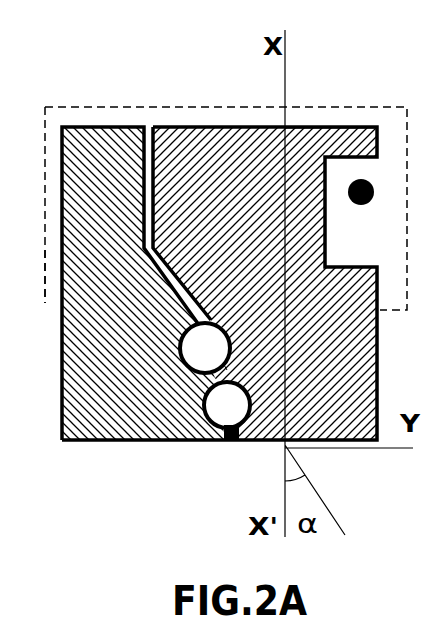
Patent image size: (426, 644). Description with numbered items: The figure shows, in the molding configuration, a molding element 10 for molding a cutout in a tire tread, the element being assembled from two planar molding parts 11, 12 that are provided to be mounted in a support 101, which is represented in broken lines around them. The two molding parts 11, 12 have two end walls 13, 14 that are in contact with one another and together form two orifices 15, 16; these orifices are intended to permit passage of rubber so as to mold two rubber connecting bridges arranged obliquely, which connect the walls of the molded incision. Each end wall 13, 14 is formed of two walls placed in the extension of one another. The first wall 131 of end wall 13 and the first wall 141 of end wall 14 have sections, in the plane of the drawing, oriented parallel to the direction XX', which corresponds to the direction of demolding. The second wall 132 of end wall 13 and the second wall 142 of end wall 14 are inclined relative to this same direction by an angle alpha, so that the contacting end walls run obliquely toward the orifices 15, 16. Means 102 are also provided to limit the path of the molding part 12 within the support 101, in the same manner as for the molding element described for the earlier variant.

The molding element 10 is at (31, 108).
The support 101 is at (46, 308).
The path-limiting means 102 is at (373, 184).
The planar molding part 11 is at (93, 375).
The planar molding part 12 is at (356, 447).
The end wall 13 is at (186, 383).
The first wall 131 is at (129, 157).
The second wall 132 is at (177, 303).
The end wall 14 is at (230, 372).
The first wall 141 is at (173, 170).
The second wall 142 is at (286, 128).
The orifice 15 is at (200, 353).
The orifice 16 is at (232, 415).